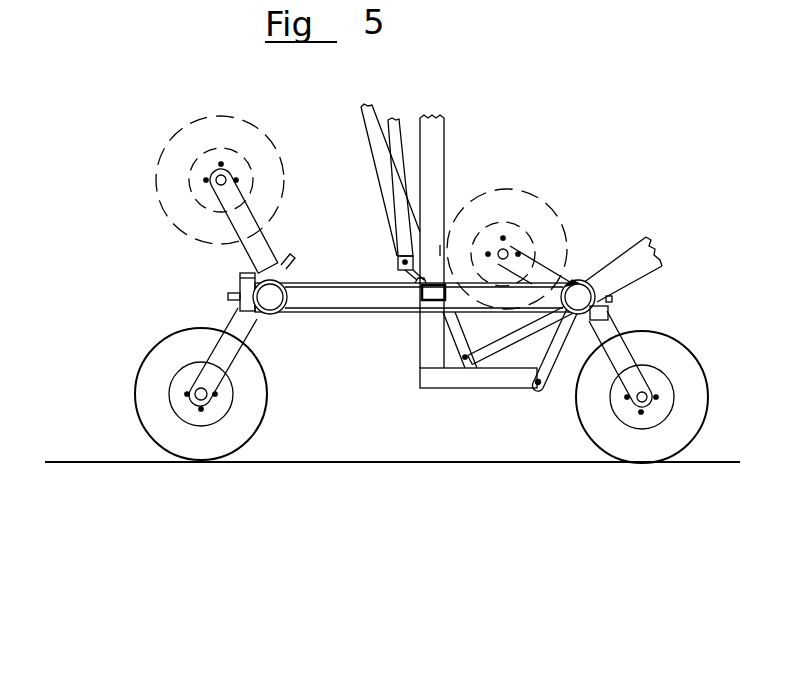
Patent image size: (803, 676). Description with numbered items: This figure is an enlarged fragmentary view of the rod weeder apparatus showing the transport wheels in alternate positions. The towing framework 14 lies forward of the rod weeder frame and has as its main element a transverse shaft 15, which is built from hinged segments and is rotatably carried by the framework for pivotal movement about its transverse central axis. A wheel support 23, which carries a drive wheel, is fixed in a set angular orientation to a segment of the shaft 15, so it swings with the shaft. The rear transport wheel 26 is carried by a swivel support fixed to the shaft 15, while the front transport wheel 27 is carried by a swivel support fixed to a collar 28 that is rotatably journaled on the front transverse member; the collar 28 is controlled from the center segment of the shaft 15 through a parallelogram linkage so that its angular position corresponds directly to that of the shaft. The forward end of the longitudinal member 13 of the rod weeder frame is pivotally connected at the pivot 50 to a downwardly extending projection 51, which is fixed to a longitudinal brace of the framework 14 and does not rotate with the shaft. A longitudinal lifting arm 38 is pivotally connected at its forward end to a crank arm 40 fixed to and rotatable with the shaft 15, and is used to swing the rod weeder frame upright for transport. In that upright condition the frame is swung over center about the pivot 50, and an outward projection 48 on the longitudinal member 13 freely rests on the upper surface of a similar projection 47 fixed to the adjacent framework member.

The longitudinal member 13 is at (422, 352).
The towing framework 14 is at (372, 314).
The transverse shaft 15 is at (561, 295).
The wheel support 23 is at (637, 251).
The rear transport wheel 26 is at (586, 412).
The front transport wheel 27 is at (252, 423).
The collar 28 is at (595, 284).
The lifting arm 38 is at (380, 140).
The crank arm 40 is at (496, 340).
The projection 47 is at (446, 296).
The outward projection 48 is at (419, 286).
The pivot 50 is at (538, 385).
The projection 51 is at (550, 358).